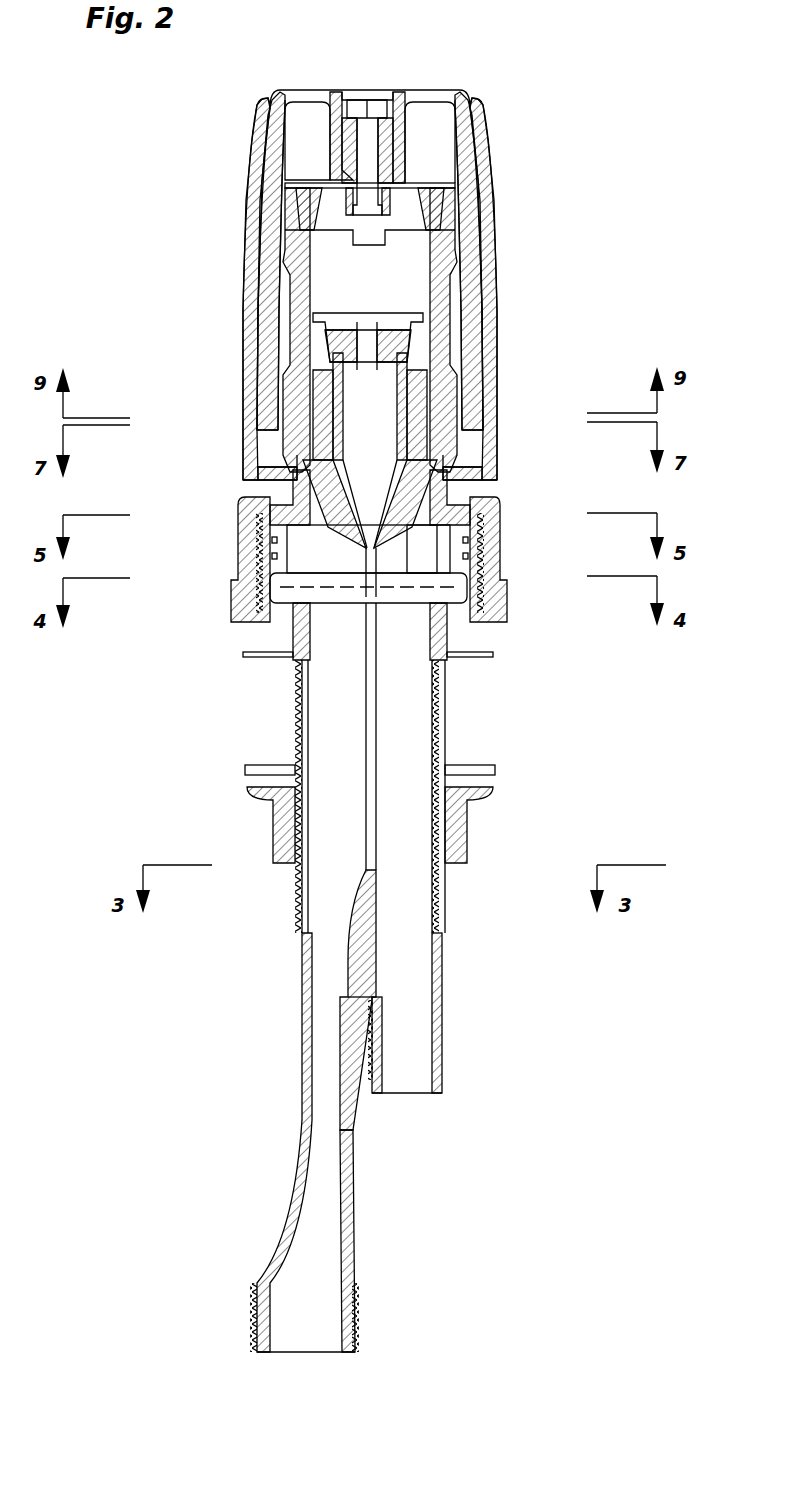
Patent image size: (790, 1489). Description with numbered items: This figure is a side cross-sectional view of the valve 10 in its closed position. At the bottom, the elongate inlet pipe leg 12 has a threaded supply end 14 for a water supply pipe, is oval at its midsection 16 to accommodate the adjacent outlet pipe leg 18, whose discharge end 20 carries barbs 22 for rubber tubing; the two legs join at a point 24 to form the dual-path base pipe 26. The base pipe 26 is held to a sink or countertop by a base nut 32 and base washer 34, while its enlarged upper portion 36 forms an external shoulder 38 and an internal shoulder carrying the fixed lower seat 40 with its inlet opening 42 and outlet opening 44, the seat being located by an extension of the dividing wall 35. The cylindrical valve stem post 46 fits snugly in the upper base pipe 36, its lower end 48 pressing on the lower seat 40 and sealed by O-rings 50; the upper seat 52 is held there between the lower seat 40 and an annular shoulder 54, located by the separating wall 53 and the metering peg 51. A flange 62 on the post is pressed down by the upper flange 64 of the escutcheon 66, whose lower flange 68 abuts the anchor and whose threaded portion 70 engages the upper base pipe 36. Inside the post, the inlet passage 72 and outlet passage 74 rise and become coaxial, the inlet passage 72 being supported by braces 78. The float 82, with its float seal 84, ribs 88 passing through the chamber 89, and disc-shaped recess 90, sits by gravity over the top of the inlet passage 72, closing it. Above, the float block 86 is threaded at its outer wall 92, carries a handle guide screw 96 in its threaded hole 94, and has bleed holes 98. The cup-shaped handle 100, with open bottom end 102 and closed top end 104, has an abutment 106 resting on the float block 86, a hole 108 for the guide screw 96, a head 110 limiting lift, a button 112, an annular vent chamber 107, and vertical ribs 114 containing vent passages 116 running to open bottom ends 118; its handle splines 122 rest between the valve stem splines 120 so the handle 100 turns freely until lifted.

The valve 10 is at (550, 58).
The inlet pipe leg 12 is at (296, 1058).
The supply end 14 is at (300, 1316).
The midsection 16 is at (302, 1102).
The outlet pipe leg 18 is at (420, 1023).
The discharge end 20 is at (416, 1102).
The ridges or barbs 22 is at (440, 1042).
The point 24 is at (346, 968).
The dual-path valve base pipe 26 is at (296, 893).
The base nut 32 is at (462, 822).
The base washer 34 is at (496, 770).
The dividing wall 35 is at (346, 690).
The upper portion of base pipe 36 is at (240, 592).
The external shoulder 38 is at (272, 660).
The lower seat 40 is at (372, 640).
The inlet opening 42 is at (330, 603).
The outlet opening 44 is at (388, 610).
The valve stem post 46 is at (470, 517).
The lower end of valve stem post 48 is at (476, 578).
The O-rings 50 is at (470, 548).
The metering peg 51 is at (408, 561).
The upper seat 52 is at (372, 566).
The separating wall 53 is at (390, 494).
The annular shoulder 54 is at (316, 522).
The flange 62 is at (270, 531).
The upper inwardly extending flange 64 is at (242, 507).
The escutcheon 66 is at (256, 559).
The lower outwardly extending flange 68 is at (268, 626).
The threaded portion 70 is at (292, 622).
The inlet passage 72 is at (376, 452).
The outlet passage 74 is at (292, 366).
The braces 78 is at (300, 450).
The float 82 is at (462, 335).
The float seal 84 is at (410, 302).
The float block 86 is at (432, 205).
The ribs 88 is at (366, 314).
The chamber 89 is at (357, 280).
The disc-shaped recess 90 is at (370, 406).
The outer wall of float block 92 is at (446, 238).
The vertical threaded hole 94 is at (250, 226).
The handle guide screw 96 is at (396, 128).
The vent or bleed holes 98 is at (322, 214).
The handle 100 is at (282, 88).
The open bottom end 102 is at (478, 484).
The closed top end 104 is at (312, 90).
The abutment 106 is at (400, 156).
The annular vent chamber 107 is at (284, 152).
The hole 108 is at (428, 108).
The head of guide screw 110 is at (392, 94).
The button 112 is at (366, 96).
The vertical ribs 114 is at (256, 143).
The vent passages 116 is at (268, 406).
The open bottom ends 118 is at (262, 470).
The valve stem splines 120 is at (354, 225).
The handle splines 122 is at (286, 305).